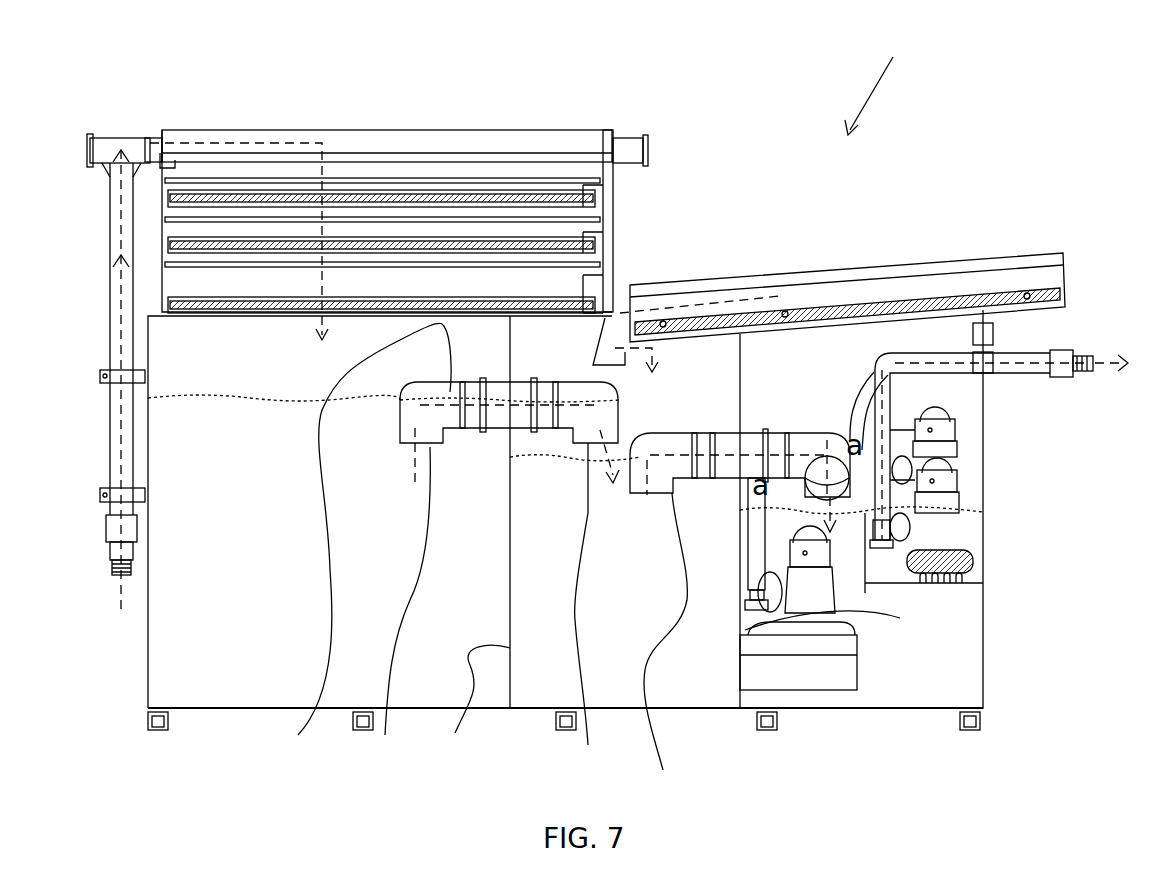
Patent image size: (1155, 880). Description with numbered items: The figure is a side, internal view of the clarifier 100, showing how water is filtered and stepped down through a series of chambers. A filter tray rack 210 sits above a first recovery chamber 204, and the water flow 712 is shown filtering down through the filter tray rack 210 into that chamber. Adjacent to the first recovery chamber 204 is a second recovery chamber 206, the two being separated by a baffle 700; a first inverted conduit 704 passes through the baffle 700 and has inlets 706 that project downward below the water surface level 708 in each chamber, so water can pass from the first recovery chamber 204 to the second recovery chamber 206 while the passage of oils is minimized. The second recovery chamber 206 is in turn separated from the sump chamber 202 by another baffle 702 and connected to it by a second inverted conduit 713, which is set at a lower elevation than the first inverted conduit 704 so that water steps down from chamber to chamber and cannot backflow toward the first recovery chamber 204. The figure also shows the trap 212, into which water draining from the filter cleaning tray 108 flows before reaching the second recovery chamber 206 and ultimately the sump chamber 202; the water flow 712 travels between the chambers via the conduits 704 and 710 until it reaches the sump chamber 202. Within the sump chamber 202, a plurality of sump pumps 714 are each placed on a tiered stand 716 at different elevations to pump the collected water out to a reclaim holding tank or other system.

The clarifier 100 is at (895, 79).
The filter cleaning tray 108 is at (905, 258).
The sump chamber 202 is at (947, 650).
The first recovery chamber 204 is at (253, 685).
The second recovery chamber 206 is at (553, 694).
The filter tray rack 210 is at (613, 212).
The trap 212 is at (613, 315).
The baffle 700 is at (467, 709).
The baffle 702 is at (738, 668).
The first inverted conduit 704 is at (363, 550).
The inlets 706 is at (495, 611).
The water surface level 708 is at (267, 398).
The conduit 710 is at (797, 378).
The water flow 712 is at (283, 140).
The second inverted conduit 713 is at (666, 648).
The sump pump 714 is at (935, 447).
The tiered stand 716 is at (825, 648).